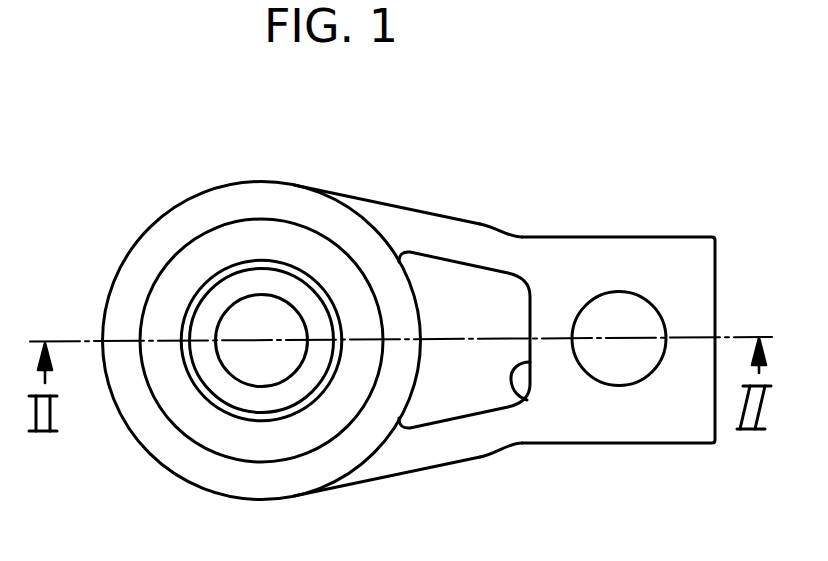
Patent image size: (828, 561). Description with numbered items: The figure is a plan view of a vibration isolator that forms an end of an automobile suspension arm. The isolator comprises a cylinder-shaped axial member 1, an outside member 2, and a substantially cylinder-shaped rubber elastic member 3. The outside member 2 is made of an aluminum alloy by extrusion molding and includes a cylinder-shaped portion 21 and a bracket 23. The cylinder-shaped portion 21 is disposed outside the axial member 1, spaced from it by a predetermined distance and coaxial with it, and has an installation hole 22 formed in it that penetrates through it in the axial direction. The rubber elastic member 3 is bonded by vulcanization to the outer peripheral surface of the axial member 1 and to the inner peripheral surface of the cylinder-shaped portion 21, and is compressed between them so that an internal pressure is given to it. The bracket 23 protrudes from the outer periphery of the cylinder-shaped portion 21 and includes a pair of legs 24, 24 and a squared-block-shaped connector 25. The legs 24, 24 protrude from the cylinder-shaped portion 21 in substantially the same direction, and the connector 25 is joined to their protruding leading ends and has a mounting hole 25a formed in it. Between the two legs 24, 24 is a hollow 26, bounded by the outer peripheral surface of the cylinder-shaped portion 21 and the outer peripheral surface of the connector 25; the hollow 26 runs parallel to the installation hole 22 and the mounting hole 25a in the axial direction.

The axial member 1 is at (158, 490).
The outside member 2 is at (504, 332).
The rubber elastic member 3 is at (287, 513).
The cylinder-shaped portion 21 is at (195, 218).
The installation hole 22 is at (278, 220).
The bracket 23 is at (531, 226).
The legs 24 is at (444, 242).
The connector 25 is at (653, 258).
The mounting hole 25a is at (640, 472).
The hollow 26 is at (535, 485).